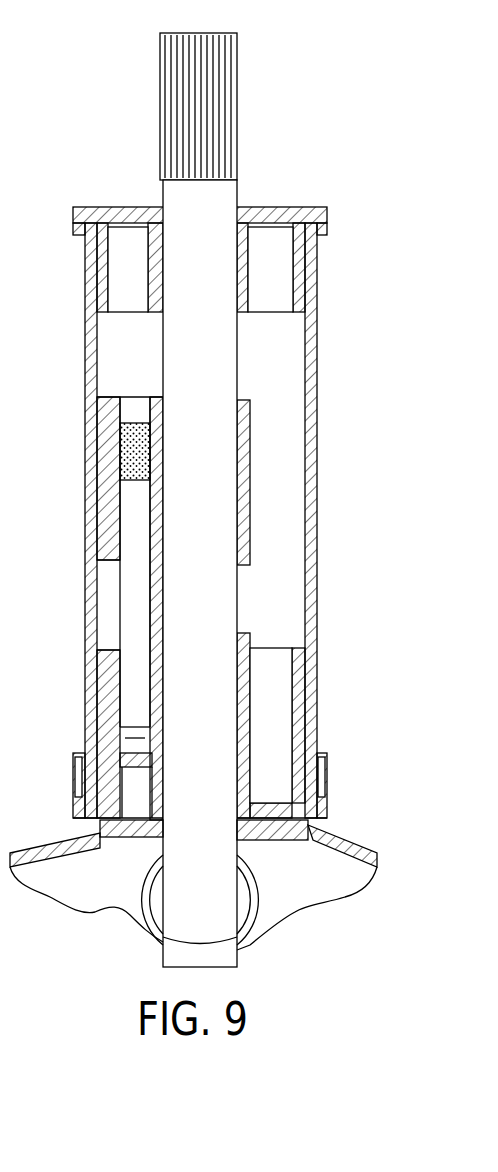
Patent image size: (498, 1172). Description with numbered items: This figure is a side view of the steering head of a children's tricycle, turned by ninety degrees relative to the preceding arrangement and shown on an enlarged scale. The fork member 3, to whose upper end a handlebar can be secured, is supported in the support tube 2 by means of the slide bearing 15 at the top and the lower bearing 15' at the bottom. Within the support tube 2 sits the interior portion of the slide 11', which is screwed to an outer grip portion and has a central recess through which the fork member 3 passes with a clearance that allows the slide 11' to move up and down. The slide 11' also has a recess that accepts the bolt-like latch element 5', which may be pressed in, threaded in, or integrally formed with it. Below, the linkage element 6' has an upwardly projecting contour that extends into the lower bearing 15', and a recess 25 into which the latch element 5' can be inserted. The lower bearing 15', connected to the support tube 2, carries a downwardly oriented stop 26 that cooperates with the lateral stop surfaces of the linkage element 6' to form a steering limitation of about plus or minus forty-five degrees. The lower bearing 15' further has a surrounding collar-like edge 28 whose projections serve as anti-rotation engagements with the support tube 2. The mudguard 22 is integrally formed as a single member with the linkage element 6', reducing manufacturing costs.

The support tube 2 is at (88, 318).
The fork member 3 is at (222, 196).
The latch element 5' is at (156, 608).
The linkage element 6' is at (193, 887).
The interior portion of slide 11' is at (105, 478).
The slide bearing 15 is at (229, 267).
The lower bearing 15' is at (306, 725).
The mudguard 22 is at (365, 863).
The recess 25 is at (130, 807).
The stop 26 is at (272, 815).
The collar-like edge 28 is at (75, 752).